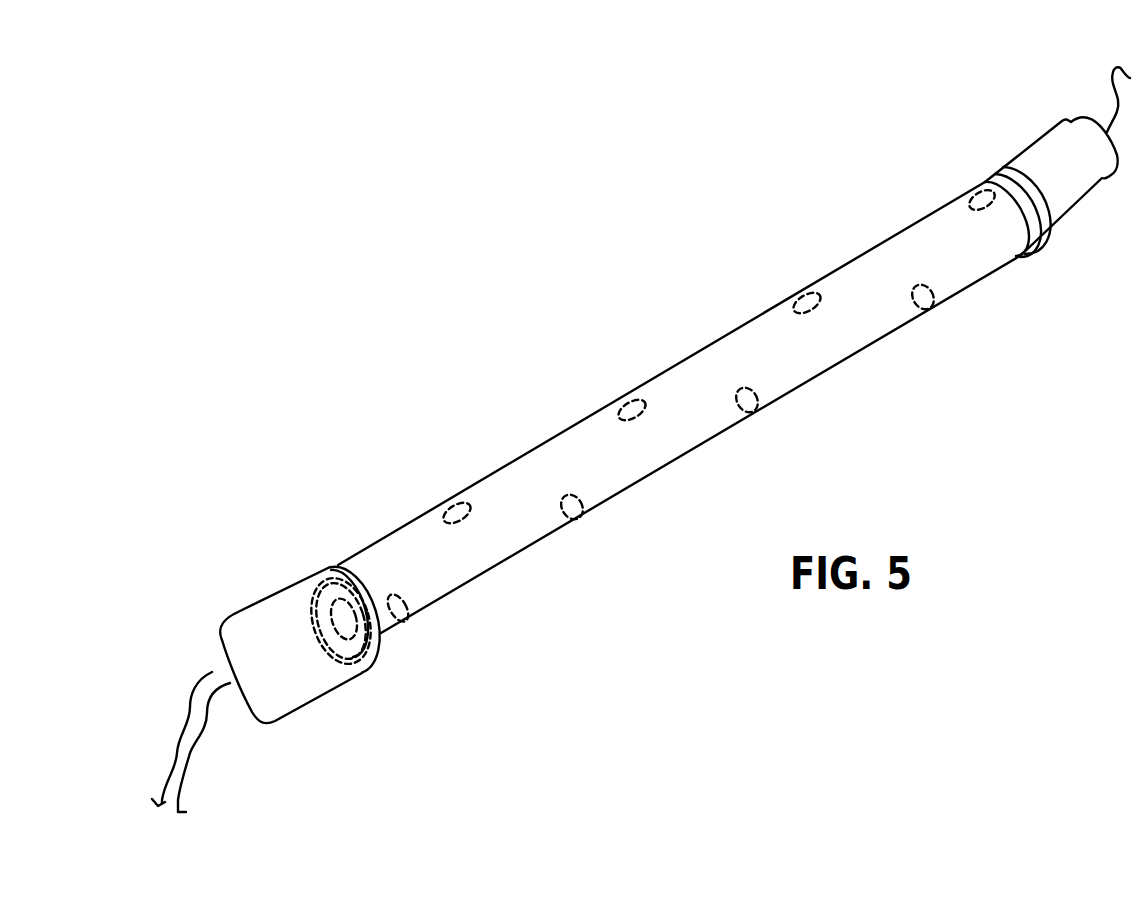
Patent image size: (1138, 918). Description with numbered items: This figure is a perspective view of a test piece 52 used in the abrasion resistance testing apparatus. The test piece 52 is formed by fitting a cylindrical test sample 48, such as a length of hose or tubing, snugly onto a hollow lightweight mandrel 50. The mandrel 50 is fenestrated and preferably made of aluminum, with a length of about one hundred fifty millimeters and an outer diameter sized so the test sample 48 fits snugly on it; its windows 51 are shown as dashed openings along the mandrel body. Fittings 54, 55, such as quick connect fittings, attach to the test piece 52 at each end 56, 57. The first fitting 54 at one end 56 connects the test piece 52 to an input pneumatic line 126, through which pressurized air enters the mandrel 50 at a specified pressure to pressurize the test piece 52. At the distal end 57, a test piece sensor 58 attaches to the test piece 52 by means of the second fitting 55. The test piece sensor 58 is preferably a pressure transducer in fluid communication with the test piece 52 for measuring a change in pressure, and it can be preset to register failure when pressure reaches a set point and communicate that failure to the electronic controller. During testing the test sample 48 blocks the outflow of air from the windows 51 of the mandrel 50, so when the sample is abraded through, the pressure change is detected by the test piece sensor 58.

The test sample 48 is at (583, 450).
The mandrel 50 is at (334, 586).
The windows 51 is at (580, 507).
The test piece 52 is at (767, 333).
The first fitting 54 is at (344, 582).
The second fitting 55 is at (993, 176).
The end 56 is at (383, 630).
The distal end 57 is at (1020, 257).
The test piece sensor 58 is at (1047, 143).
The input pneumatic line 126 is at (175, 783).